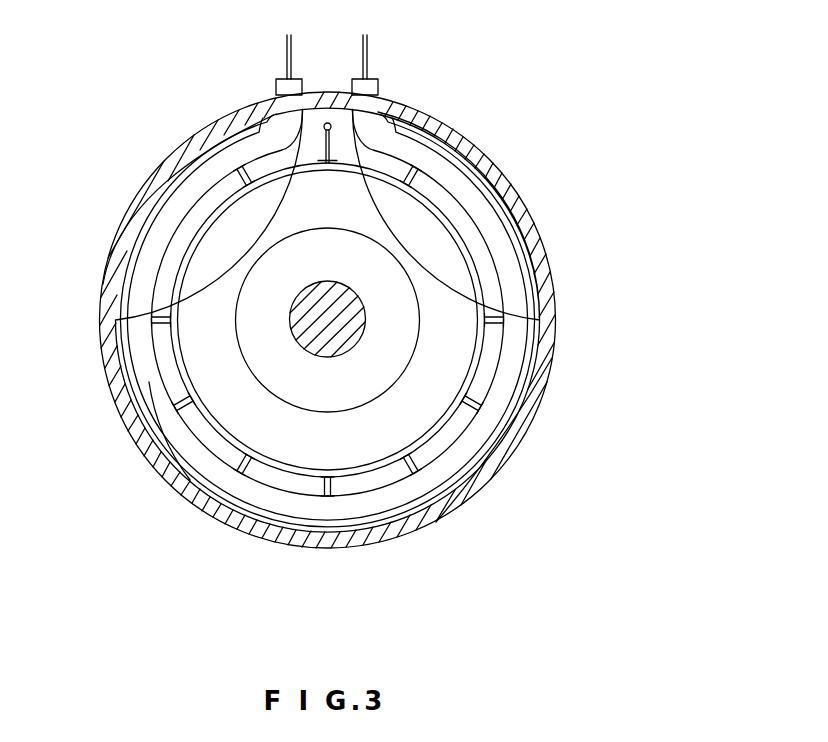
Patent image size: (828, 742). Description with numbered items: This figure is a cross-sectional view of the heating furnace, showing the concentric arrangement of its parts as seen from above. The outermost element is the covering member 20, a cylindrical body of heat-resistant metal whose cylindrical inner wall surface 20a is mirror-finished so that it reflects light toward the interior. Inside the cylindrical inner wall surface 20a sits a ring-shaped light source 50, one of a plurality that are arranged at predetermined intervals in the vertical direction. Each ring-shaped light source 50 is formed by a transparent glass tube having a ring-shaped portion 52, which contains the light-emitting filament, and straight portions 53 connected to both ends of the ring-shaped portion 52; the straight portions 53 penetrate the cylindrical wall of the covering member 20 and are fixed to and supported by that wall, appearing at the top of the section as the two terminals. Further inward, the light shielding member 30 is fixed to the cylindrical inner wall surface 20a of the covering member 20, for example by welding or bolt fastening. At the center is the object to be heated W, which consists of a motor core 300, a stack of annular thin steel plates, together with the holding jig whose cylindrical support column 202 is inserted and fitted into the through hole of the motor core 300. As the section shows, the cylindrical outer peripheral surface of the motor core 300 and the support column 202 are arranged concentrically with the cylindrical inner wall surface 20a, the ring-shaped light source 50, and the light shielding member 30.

The covering member 20 is at (432, 106).
The cylindrical inner wall surface 20a is at (151, 417).
The light shielding member 30 is at (286, 466).
The ring-shaped light source 50 is at (476, 173).
The ring-shaped portion 52 is at (141, 332).
The straight portion 53 is at (277, 94).
The support column 202 is at (331, 320).
The motor core 300 is at (386, 355).
The object to be heated W is at (432, 318).